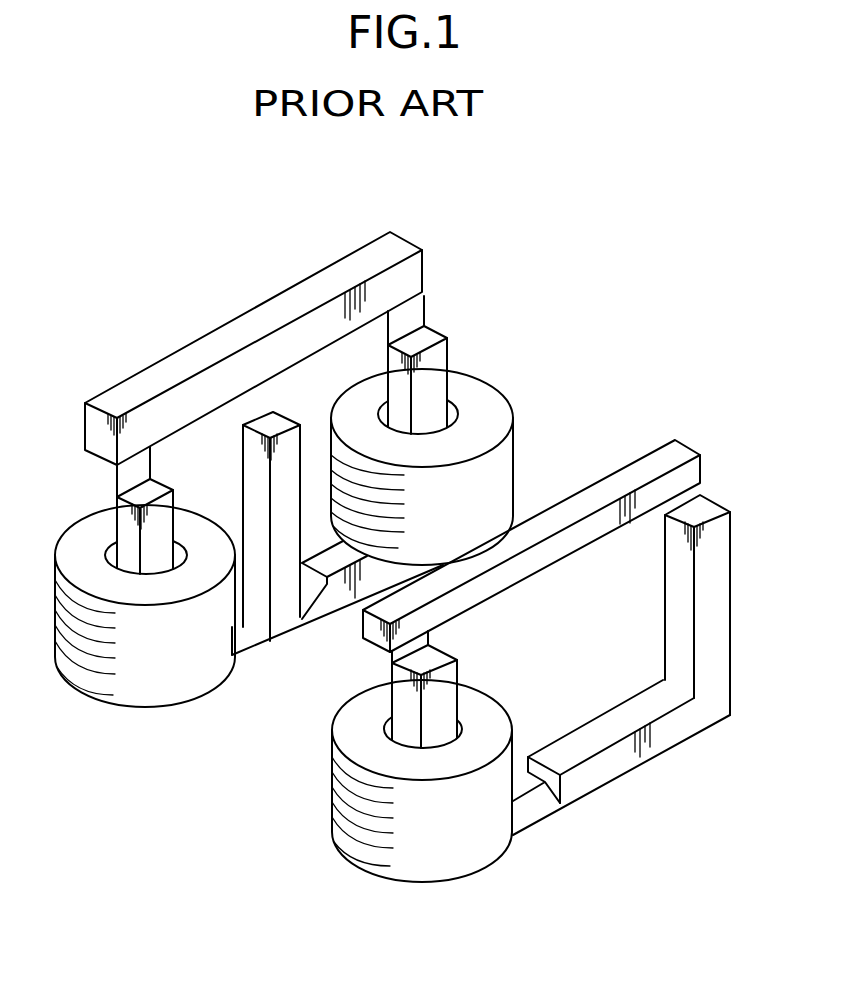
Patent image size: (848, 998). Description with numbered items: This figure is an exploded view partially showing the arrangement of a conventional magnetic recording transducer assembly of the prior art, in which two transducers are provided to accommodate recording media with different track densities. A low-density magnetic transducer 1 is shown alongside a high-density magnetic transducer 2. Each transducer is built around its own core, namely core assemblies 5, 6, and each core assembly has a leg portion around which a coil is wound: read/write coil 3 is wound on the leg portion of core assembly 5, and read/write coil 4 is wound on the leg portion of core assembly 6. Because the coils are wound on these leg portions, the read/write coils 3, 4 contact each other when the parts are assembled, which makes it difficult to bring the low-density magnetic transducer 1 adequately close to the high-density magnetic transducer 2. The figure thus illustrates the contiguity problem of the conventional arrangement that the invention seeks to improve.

The low-density magnetic transducer 1 is at (319, 496).
The high-density magnetic transducer 2 is at (569, 640).
The read/write coil 3 is at (103, 688).
The read/write coil 4 is at (403, 867).
The core assembly 5 is at (238, 657).
The core assembly 6 is at (533, 828).